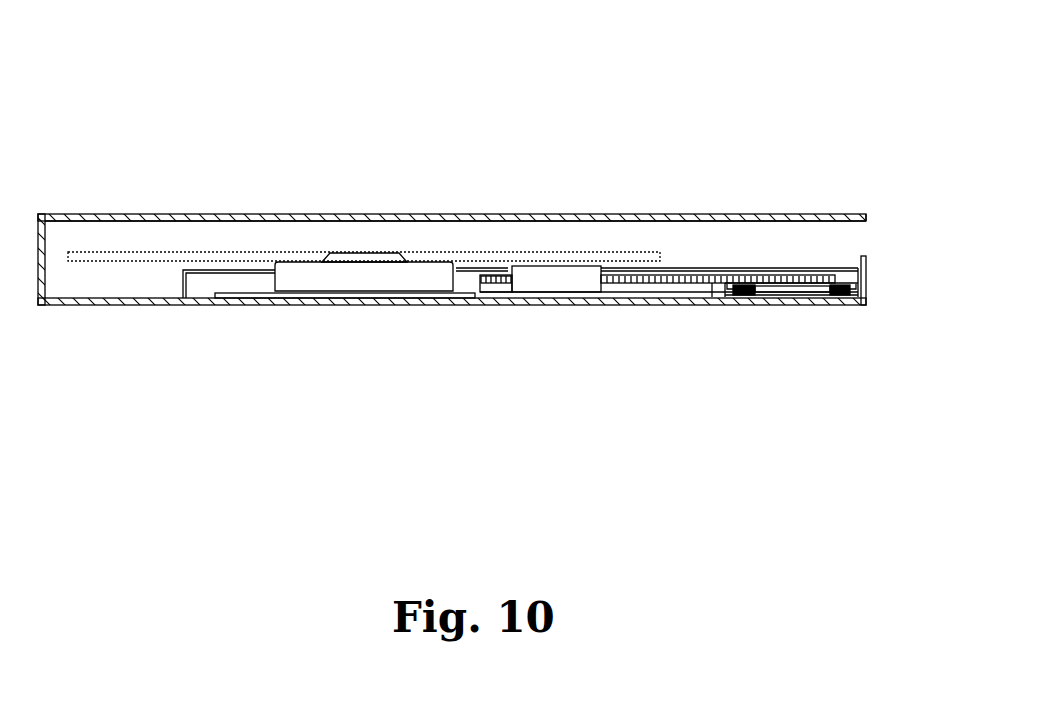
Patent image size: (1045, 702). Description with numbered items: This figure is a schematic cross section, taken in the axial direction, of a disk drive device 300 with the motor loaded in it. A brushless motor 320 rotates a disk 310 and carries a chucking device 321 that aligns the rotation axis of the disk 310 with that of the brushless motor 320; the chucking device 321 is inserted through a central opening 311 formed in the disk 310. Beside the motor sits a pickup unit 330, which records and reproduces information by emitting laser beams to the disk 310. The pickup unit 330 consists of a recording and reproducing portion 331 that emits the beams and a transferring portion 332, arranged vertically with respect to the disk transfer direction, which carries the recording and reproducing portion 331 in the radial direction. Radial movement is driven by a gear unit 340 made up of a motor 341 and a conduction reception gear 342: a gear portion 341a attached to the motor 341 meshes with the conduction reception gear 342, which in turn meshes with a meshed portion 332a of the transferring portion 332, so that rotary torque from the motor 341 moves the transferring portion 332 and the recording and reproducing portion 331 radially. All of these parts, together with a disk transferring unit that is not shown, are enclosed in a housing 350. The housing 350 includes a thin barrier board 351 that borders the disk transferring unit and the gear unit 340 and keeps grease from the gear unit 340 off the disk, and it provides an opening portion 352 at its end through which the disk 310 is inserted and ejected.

The disk drive device 300 is at (127, 102).
The disk 310 is at (457, 251).
The central opening 311 is at (407, 257).
The brushless motor 320 is at (274, 282).
The chucking device 321 is at (364, 262).
The pickup unit 330 is at (556, 294).
The recording and reproducing portion 331 is at (540, 287).
The transferring portion 332 is at (668, 287).
The meshed portion 332a is at (620, 284).
The gear unit 340 is at (803, 290).
The motor 341 is at (775, 288).
The gear portion 341a is at (832, 291).
The conduction reception gear 342 is at (713, 284).
The housing 350 is at (218, 212).
The barrier board 351 is at (733, 270).
The opening portion 352 is at (860, 238).